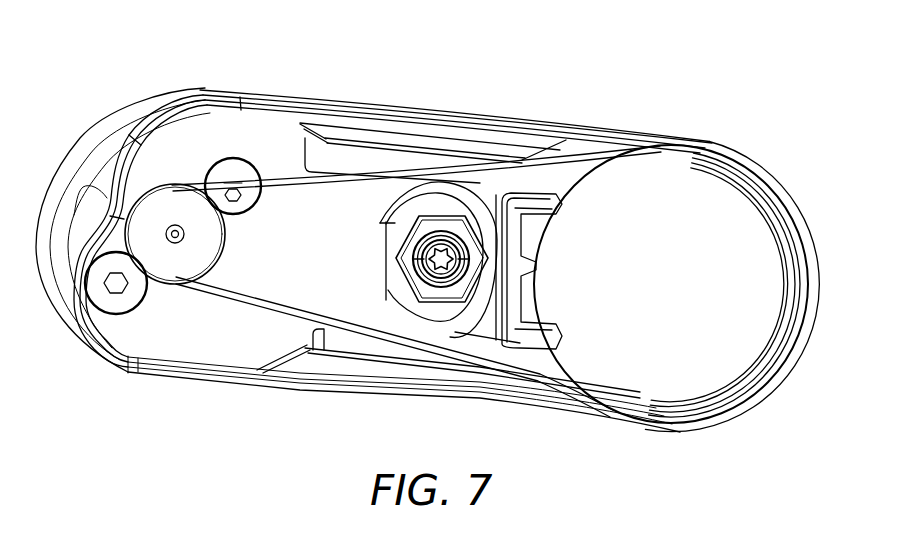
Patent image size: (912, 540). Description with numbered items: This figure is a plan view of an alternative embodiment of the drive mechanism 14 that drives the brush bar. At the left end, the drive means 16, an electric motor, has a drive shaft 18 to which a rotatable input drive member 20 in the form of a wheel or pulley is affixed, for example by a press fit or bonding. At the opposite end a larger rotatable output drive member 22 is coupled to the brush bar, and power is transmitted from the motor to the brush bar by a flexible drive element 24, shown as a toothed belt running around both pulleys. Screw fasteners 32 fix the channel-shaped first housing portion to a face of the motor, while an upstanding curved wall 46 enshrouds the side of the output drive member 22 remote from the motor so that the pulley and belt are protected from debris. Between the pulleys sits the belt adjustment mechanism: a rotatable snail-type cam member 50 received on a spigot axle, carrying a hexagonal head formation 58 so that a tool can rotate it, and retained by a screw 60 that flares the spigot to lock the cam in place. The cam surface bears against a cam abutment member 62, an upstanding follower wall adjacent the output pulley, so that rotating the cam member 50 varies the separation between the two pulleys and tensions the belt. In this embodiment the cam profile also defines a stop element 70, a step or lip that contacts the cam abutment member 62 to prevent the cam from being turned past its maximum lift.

The drive mechanism 14 is at (646, 65).
The drive means 16 is at (90, 125).
The drive shaft 18 is at (177, 243).
The input drive member 20 is at (217, 240).
The output drive member 22 is at (740, 355).
The flexible drive element 24 is at (287, 168).
The screw fasteners 32 is at (233, 160).
The upstanding curved wall 46 is at (778, 173).
The cam member 50 is at (455, 320).
The head formation 58 is at (402, 242).
The screw 60 is at (420, 268).
The cam abutment member 62 is at (530, 350).
The stop element 70 is at (392, 222).